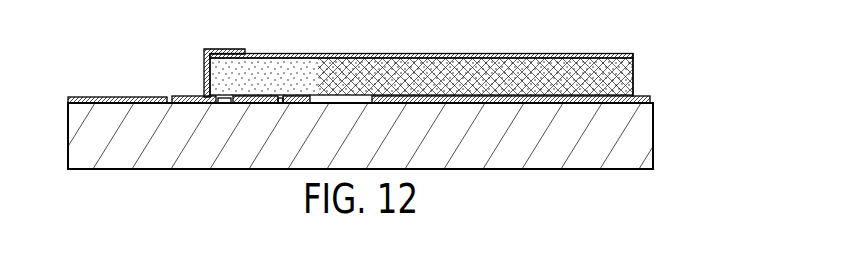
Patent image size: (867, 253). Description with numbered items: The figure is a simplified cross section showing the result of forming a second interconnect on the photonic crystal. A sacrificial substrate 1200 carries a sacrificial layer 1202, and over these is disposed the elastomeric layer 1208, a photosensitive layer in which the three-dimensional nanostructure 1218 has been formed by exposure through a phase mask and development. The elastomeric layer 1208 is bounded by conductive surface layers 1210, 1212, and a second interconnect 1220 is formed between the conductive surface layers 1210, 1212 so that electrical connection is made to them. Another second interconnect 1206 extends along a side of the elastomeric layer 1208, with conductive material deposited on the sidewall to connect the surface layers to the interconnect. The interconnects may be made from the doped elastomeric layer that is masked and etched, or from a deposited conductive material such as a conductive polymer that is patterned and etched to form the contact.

The sacrificial substrate 1200 is at (655, 138).
The sacrificial layer 1202 is at (103, 97).
The second interconnect 1206 is at (188, 96).
The elastomeric layer 1208 is at (625, 72).
The conductive surface layer 1210 is at (573, 93).
The conductive surface layer 1212 is at (413, 53).
The die body 1218 is at (510, 78).
The second interconnect 1220 is at (222, 48).